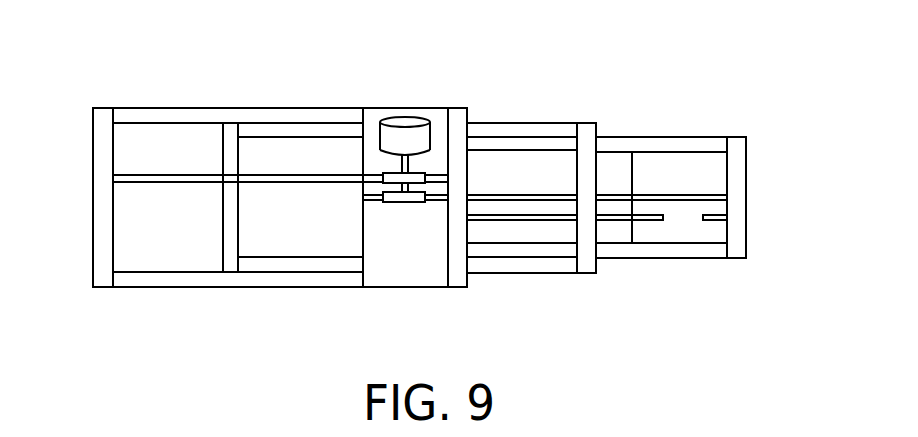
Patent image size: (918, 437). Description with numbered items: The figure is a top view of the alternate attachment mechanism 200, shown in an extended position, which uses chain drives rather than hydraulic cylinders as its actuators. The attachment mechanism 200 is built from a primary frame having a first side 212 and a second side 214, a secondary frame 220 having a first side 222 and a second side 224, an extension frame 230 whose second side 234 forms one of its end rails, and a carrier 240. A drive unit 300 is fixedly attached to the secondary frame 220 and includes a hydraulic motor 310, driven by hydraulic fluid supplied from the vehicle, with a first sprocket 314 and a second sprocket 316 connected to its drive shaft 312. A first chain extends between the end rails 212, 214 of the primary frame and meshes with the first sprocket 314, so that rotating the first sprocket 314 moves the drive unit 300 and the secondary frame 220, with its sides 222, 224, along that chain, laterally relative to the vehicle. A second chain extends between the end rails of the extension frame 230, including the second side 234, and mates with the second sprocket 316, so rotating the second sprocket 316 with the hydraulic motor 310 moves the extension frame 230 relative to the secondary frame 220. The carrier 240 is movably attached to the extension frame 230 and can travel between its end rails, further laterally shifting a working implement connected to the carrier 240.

The attachment mechanism 200 is at (421, 177).
The first side 212 is at (93, 158).
The second side 214 is at (468, 280).
The secondary frame 220 is at (290, 265).
The support post 222 is at (223, 248).
The housing 224 is at (597, 233).
The extension frame 230 is at (696, 217).
The second side 234 is at (749, 228).
The carrier 240 is at (658, 228).
The drive unit 300 is at (386, 191).
The hydraulic motor 310 is at (397, 133).
The drive shaft 312 is at (395, 162).
The first sprocket 314 is at (421, 172).
The second sprocket 316 is at (396, 198).